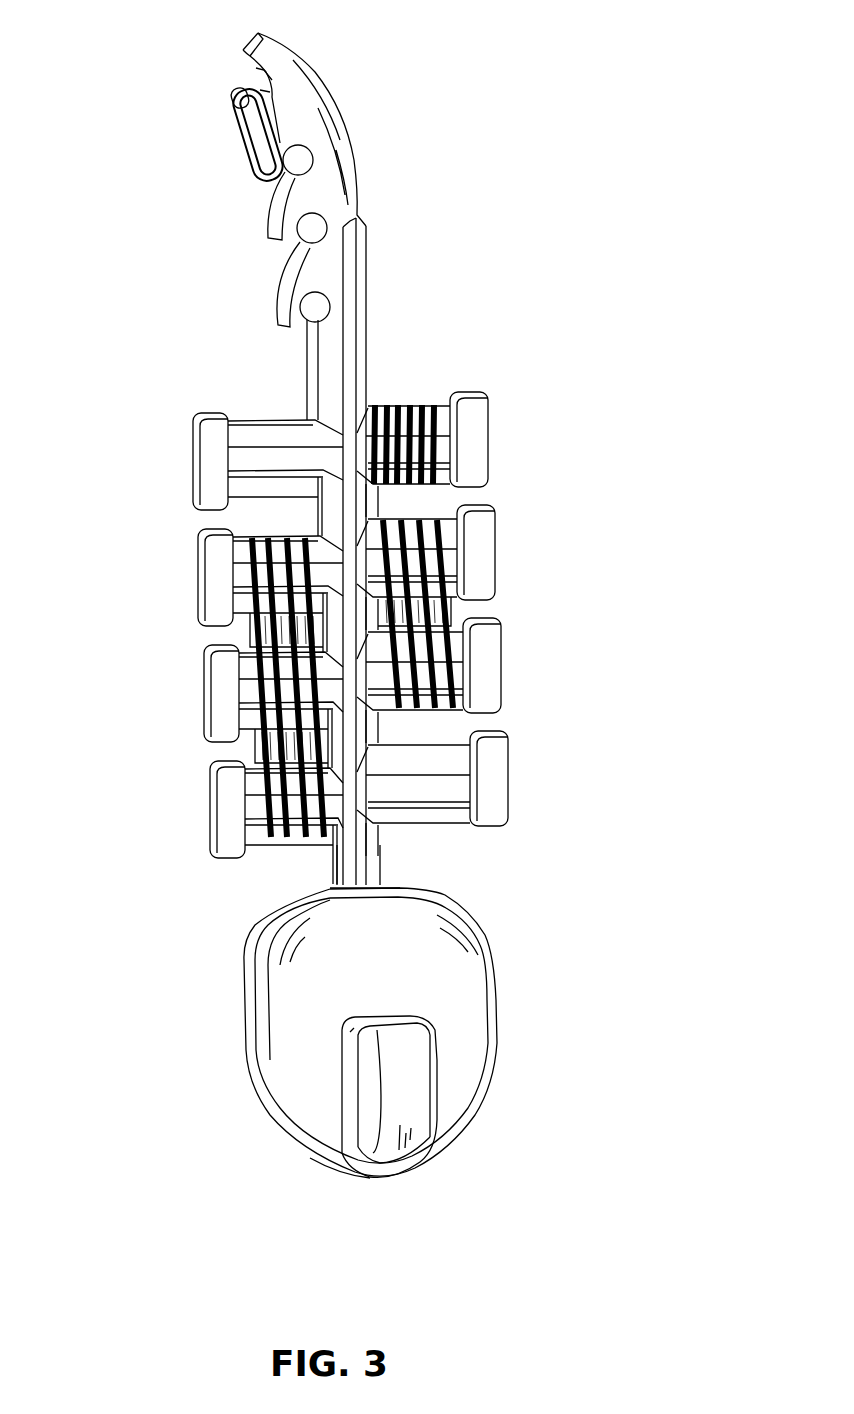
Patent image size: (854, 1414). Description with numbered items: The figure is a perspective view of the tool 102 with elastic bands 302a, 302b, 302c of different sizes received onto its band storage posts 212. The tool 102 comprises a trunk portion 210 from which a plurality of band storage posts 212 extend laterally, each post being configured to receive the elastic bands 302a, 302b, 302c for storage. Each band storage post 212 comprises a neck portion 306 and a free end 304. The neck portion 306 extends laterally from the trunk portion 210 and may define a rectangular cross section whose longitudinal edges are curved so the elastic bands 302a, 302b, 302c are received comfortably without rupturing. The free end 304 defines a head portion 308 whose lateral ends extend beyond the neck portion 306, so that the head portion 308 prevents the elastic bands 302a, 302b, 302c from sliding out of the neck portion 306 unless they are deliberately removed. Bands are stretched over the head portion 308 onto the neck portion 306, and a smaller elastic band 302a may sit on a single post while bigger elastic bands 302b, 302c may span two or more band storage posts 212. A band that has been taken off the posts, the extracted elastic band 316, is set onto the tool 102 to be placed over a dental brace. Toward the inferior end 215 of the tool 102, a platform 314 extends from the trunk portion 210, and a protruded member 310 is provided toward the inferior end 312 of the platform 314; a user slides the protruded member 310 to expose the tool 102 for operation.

The tool 102 is at (418, 86).
The extracted elastic band 316 is at (243, 124).
The neck portion 306 is at (305, 418).
The trunk portion 210 is at (368, 365).
The free end 304 is at (234, 421).
The head portion 308 is at (192, 450).
The band storage posts 212 is at (189, 474).
The elastic band 302a is at (413, 410).
The elastic band 302b is at (447, 588).
The elastic band 302c is at (260, 700).
The platform 314 is at (497, 985).
The inferior end of the platform 312 is at (466, 1146).
The inferior end of the tool 215 is at (425, 1196).
The protruded member 310 is at (437, 1063).